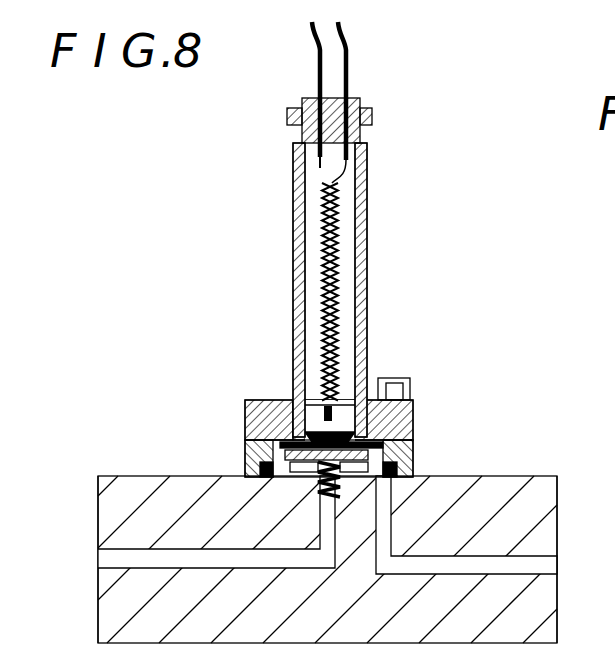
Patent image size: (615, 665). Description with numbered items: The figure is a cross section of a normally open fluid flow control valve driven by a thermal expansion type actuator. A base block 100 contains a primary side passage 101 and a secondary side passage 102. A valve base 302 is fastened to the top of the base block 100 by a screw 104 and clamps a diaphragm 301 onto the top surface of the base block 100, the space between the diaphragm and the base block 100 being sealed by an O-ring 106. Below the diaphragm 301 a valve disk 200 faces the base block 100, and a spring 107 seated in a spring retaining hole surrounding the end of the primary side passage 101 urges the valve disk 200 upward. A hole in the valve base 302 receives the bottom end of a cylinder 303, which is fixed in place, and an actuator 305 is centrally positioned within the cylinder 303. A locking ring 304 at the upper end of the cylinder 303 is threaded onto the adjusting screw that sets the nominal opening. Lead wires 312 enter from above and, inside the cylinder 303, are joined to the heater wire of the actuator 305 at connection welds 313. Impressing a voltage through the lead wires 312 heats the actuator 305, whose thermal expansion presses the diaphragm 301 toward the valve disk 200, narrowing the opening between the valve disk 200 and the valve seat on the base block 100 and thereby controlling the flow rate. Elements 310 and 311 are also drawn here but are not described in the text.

The base block 100 is at (510, 476).
The primary side passage 101 is at (98, 568).
The secondary side passage 102 is at (557, 566).
The screw 104 is at (398, 377).
The O-ring 106 is at (269, 478).
The spring 107 is at (316, 500).
The valve disk 200 is at (245, 458).
The diaphragm 301 is at (413, 458).
The valve base 302 is at (413, 412).
The cylinder 303 is at (367, 252).
The locking ring 304 is at (373, 112).
The actuator 305 is at (342, 205).
The holder 310 is at (245, 420).
The flange 311 is at (290, 129).
The lead wires 312 is at (313, 35).
The connection welds 313 is at (368, 157).